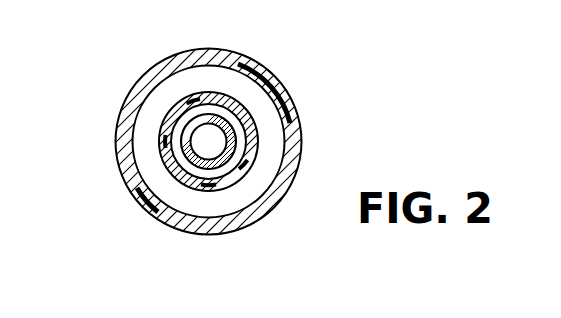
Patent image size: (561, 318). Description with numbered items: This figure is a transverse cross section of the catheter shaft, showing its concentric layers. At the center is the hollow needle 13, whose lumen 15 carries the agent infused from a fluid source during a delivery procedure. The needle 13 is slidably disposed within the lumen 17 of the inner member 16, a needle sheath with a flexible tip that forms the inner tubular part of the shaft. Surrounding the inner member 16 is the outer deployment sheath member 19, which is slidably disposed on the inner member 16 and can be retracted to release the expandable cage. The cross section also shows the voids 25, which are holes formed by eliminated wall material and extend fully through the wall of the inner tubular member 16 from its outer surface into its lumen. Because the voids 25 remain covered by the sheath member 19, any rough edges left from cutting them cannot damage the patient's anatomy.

The needle 13 is at (228, 145).
The lumen 15 is at (209, 142).
The inner member 16 is at (165, 190).
The lumen 17 is at (233, 118).
The outer deployment sheath member 19 is at (218, 58).
The voids 25 is at (182, 100).